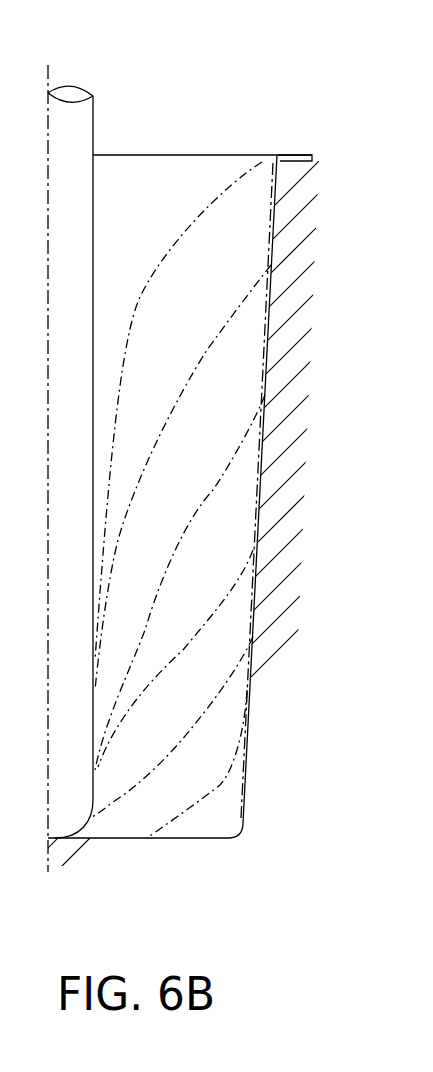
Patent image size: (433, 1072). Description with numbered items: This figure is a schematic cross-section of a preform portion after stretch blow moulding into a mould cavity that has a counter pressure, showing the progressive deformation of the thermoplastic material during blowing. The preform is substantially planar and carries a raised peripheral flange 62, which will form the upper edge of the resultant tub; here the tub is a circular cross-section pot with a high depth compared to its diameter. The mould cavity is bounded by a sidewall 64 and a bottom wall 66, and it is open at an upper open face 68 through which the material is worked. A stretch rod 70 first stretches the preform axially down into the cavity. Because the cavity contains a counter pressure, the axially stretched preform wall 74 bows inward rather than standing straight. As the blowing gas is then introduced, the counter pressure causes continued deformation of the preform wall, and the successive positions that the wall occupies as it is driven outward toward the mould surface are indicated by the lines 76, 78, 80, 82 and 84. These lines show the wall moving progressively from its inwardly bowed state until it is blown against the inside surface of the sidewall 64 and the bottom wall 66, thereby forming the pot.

The raised peripheral flange 62 is at (293, 154).
The sidewall 64 is at (264, 433).
The bottom wall 66 is at (183, 832).
The upper open face 68 is at (167, 155).
The stretch rod 70 is at (82, 257).
The axially stretched preform wall 74 is at (187, 222).
The preform wall location line 76 is at (247, 293).
The preform wall location line 78 is at (250, 432).
The preform wall location line 80 is at (130, 703).
The preform wall location line 82 is at (113, 802).
The preform wall location line 84 is at (215, 791).